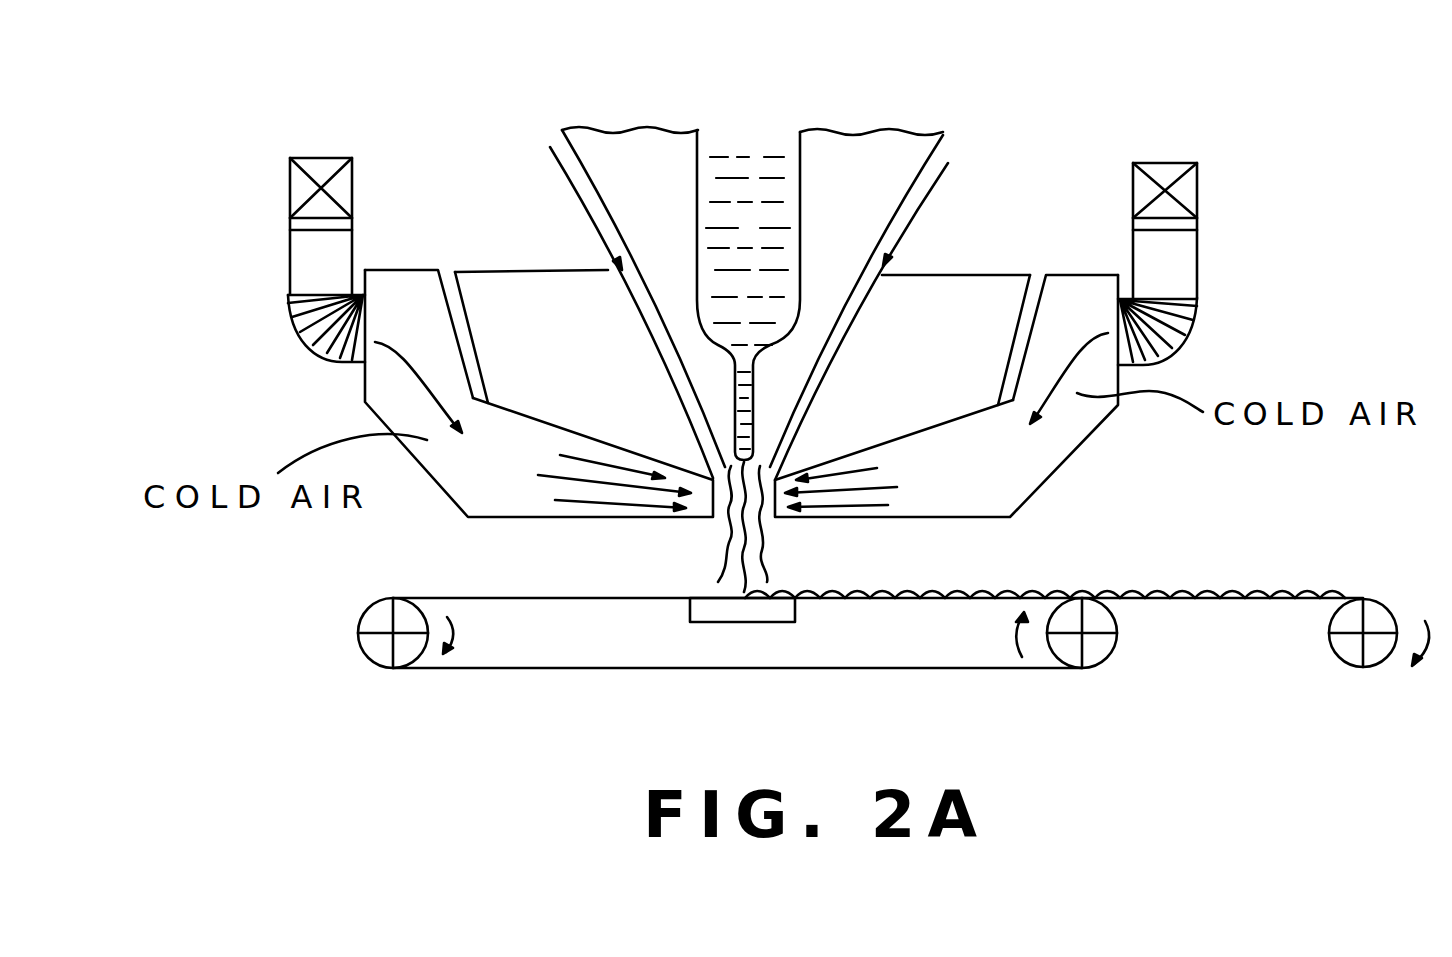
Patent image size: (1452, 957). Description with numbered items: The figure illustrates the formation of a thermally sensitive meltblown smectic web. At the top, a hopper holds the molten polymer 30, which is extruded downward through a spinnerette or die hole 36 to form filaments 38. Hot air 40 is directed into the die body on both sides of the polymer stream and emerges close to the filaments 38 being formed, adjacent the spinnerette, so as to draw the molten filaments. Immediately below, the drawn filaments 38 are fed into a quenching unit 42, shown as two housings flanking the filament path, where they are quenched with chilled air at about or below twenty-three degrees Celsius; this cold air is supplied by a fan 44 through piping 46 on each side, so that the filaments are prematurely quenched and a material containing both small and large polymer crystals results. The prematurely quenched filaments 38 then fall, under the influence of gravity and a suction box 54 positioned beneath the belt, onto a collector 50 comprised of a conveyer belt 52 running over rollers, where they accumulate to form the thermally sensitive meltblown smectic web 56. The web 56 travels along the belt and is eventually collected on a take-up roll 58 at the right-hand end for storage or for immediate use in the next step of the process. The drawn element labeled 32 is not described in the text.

The molten polymer 30 is at (750, 180).
The hopper 32 is at (800, 217).
The spinnerette or die hole 36 is at (539, 393).
The filaments 38 is at (767, 548).
The hot air 40 is at (570, 185).
The quenching unit 42 is at (943, 473).
The fan 44 is at (1197, 195).
The piping 46 is at (1197, 335).
The collector 50 is at (625, 600).
The conveyer belt 52 is at (537, 667).
The suction box 54 is at (748, 624).
The thermally sensitive meltblown smectic web 56 is at (1228, 600).
The take-up roll 58 is at (1367, 670).